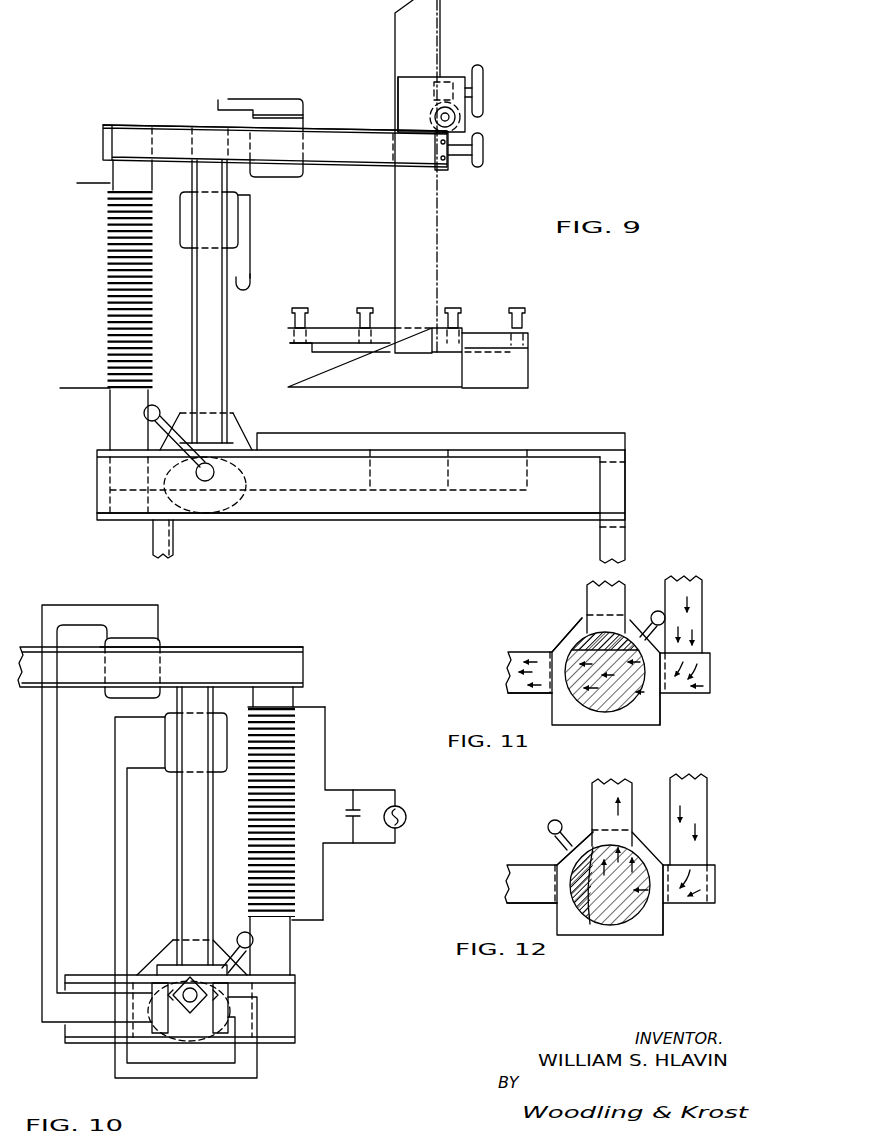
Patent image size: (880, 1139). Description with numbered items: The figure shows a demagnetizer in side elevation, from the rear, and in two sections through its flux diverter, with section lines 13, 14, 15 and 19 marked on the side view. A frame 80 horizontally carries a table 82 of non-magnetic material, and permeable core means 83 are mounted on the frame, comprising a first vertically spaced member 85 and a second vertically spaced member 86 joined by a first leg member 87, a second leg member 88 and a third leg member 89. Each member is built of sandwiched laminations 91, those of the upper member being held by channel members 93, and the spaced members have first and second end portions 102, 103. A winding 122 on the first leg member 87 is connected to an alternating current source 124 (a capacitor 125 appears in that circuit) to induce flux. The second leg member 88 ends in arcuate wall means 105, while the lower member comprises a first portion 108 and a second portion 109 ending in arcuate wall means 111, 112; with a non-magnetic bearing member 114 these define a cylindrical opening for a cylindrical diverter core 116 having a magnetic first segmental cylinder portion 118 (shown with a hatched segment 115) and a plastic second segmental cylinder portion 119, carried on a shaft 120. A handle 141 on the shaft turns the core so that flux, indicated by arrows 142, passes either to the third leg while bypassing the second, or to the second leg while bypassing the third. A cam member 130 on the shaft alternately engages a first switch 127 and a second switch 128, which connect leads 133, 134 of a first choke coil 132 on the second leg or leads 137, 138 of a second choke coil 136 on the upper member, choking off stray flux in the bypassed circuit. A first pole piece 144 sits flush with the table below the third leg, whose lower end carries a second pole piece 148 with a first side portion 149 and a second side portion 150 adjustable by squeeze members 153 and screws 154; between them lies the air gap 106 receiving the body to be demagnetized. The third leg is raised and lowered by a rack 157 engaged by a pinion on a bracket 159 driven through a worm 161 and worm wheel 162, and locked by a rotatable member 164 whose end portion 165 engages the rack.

In FIG. 9, the section line 13- 13 is at (663, 493).
In FIG. 9, the section line 14- 14 is at (272, 70).
In FIG. 9, the section line 15- 15 is at (262, 427).
In FIG. 9, the section line 19- 19 is at (357, 113).
In FIG. 9, the frame 80 is at (155, 537).
In FIG. 9, the table 82 is at (610, 446).
In FIG. 9, the permeable core means 83 is at (205, 121).
In FIG. 9, the first vertically spaced member 85 is at (318, 128).
In FIG. 10, the first vertically spaced member 85 is at (182, 653).
In FIG. 9, the second vertically spaced member 86 is at (311, 484).
In FIG. 10, the second vertically spaced member 86 is at (97, 982).
In FIG. 9, the first leg member 87 is at (117, 410).
In FIG. 10, the first leg member 87 is at (280, 950).
In FIG. 9, the second leg member 88 is at (196, 294).
In FIG. 10, the second leg member 88 is at (188, 860).
In FIG. 9, the third leg member 89 is at (418, 242).
In FIG. 11, the laminations 91 is at (597, 588).
In FIG. 12, the laminations 91 is at (688, 785).
In FIG. 9, the channel members 93 is at (103, 139).
In FIG. 10, the channel members 93 is at (299, 670).
In FIG. 9, the first end portion 102 is at (167, 135).
In FIG. 10, the first end portion 102 is at (253, 650).
In FIG. 9, the second end portion 103 is at (380, 130).
In FIG. 12, the arcuate wall means 105 is at (600, 840).
In FIG. 9, the air gap 106 is at (478, 423).
In FIG. 11, the first portion 108 is at (658, 700).
In FIG. 12, the first portion 108 is at (658, 923).
In FIG. 11, the second portion 109 is at (540, 687).
In FIG. 12, the second portion 109 is at (550, 898).
In FIG. 11, the arcuate wall means 111 is at (650, 637).
In FIG. 12, the arcuate wall means 111 is at (660, 865).
In FIG. 11, the arcuate wall means 112 is at (573, 660).
In FIG. 12, the arcuate wall means 112 is at (575, 866).
In FIG. 9, the non-magnetic bearing member 114 is at (160, 446).
In FIG. 10, the non-magnetic bearing member 114 is at (168, 951).
In FIG. 11, the non-magnetic bearing member 114 is at (657, 710).
In FIG. 12, the non-magnetic bearing member 114 is at (632, 930).
In FIG. 11, the valve segment 115 is at (597, 638).
In FIG. 9, the cylindrical diverter core 116 is at (183, 515).
In FIG. 10, the cylindrical diverter core 116 is at (205, 1032).
In FIG. 11, the cylindrical diverter core 116 is at (592, 707).
In FIG. 12, the cylindrical diverter core 116 is at (587, 918).
In FIG. 11, the first segmental cylinder portion 118 is at (607, 712).
In FIG. 12, the first segmental cylinder portion 118 is at (612, 922).
In FIG. 11, the second segmental cylinder portion 119 is at (570, 643).
In FIG. 12, the second segmental cylinder portion 119 is at (573, 857).
In FIG. 9, the shaft 120 is at (213, 480).
In FIG. 10, the shaft 120 is at (190, 1003).
In FIG. 9, the winding 122 is at (118, 246).
In FIG. 10, the winding 122 is at (275, 923).
In FIG. 10, the alternating current source 124 is at (405, 823).
In FIG. 10, the capacitor 125 is at (355, 820).
In FIG. 10, the first switch 127 is at (163, 1022).
In FIG. 10, the second switch 128 is at (230, 1006).
In FIG. 10, the cam member 130 is at (235, 1020).
In FIG. 9, the first choke coil 132 is at (180, 207).
In FIG. 10, the first choke coil 132 is at (227, 755).
In FIG. 9, the lead 133 is at (252, 237).
In FIG. 10, the lead 133 is at (143, 718).
In FIG. 9, the lead 134 is at (251, 283).
In FIG. 10, the lead 134 is at (132, 768).
In FIG. 9, the second choke coil 136 is at (292, 176).
In FIG. 10, the second choke coil 136 is at (148, 642).
In FIG. 9, the lead 137 is at (245, 98).
In FIG. 10, the lead 137 is at (95, 605).
In FIG. 9, the lead 138 is at (222, 109).
In FIG. 10, the lead 138 is at (73, 625).
In FIG. 9, the handle 141 is at (158, 406).
In FIG. 10, the handle 141 is at (242, 933).
In FIG. 11, the handle 141 is at (657, 610).
In FIG. 12, the handle 141 is at (555, 820).
In FIG. 11, the arrows 142 is at (697, 596).
In FIG. 12, the arrows 142 is at (712, 865).
In FIG. 9, the first pole piece 144 is at (410, 437).
In FIG. 9, the second pole piece 148 is at (350, 378).
In FIG. 9, the first side portion 149 is at (412, 378).
In FIG. 9, the second side portion 150 is at (520, 371).
In FIG. 9, the squeeze member 153 is at (340, 330).
In FIG. 9, the screws 154 is at (365, 300).
In FIG. 9, the rack 157 is at (438, 208).
In FIG. 9, the bracket 159 is at (418, 97).
In FIG. 9, the worm 161 is at (449, 80).
In FIG. 9, the worm wheel 162 is at (461, 120).
In FIG. 9, the rotatable member 164 is at (477, 154).
In FIG. 9, the end portion 165 is at (453, 161).